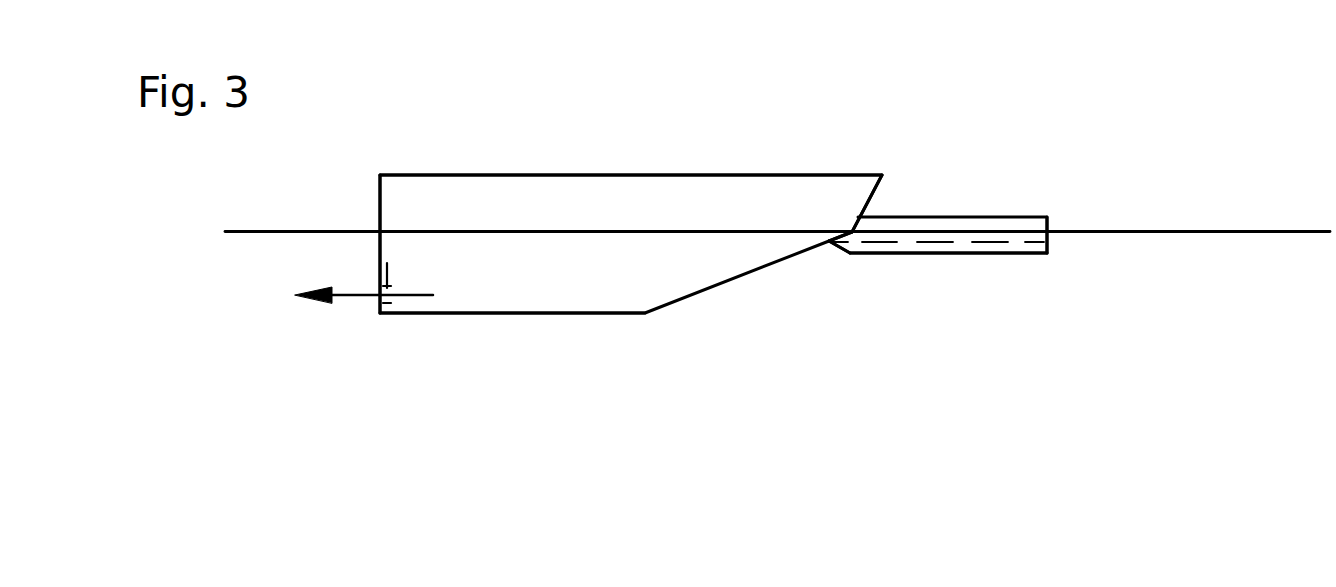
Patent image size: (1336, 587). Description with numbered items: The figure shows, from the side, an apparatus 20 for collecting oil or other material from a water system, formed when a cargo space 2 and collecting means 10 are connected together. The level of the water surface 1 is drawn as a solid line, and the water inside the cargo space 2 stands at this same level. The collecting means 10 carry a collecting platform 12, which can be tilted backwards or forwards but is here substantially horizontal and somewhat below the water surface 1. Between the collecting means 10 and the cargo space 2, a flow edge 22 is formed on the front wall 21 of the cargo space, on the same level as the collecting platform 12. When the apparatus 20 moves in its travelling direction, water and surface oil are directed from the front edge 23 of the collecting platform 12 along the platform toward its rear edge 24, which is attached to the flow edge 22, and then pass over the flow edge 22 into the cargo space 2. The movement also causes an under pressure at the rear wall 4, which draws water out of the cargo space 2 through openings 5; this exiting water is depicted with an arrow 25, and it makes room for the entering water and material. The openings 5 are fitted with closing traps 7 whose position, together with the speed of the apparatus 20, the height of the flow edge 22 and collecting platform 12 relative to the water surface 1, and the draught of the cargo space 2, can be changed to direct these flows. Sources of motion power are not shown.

The water surface level 1 is at (1243, 231).
The cargo space 2 is at (470, 197).
The rear wall 4 is at (380, 207).
The openings 5 is at (371, 306).
The closing traps 7 is at (388, 272).
The collecting means 10 is at (1008, 227).
The collecting platform 12 is at (962, 247).
The apparatus 20 is at (797, 146).
The front wall 21 is at (884, 190).
The flow edge 22 is at (827, 246).
The front edge 23 is at (1033, 244).
The rear edge 24 is at (831, 242).
The arrow 25 is at (350, 297).